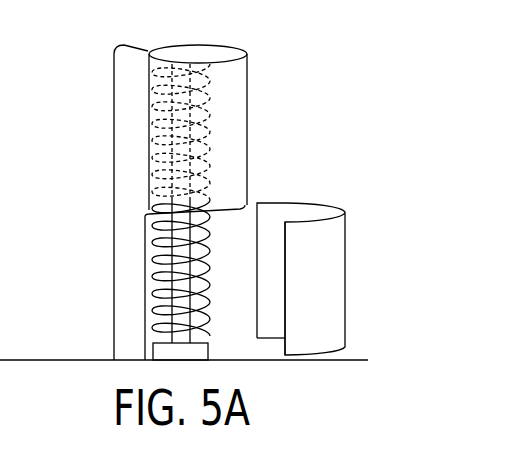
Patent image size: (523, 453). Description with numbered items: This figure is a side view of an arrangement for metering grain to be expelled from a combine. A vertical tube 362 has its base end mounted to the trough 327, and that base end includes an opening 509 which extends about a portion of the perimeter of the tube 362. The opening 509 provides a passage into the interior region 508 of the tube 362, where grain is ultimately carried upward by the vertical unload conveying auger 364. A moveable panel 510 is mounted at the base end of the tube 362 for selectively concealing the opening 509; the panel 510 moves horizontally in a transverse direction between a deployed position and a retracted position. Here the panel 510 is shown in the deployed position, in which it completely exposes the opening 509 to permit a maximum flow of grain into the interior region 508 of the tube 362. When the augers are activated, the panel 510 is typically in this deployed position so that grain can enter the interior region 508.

The trough 327 is at (349, 361).
The tube 362 is at (246, 133).
The vertical unload conveying auger 364 is at (155, 153).
The interior region 508 is at (152, 316).
The opening 509 is at (145, 261).
The moveable panel 510 is at (345, 277).